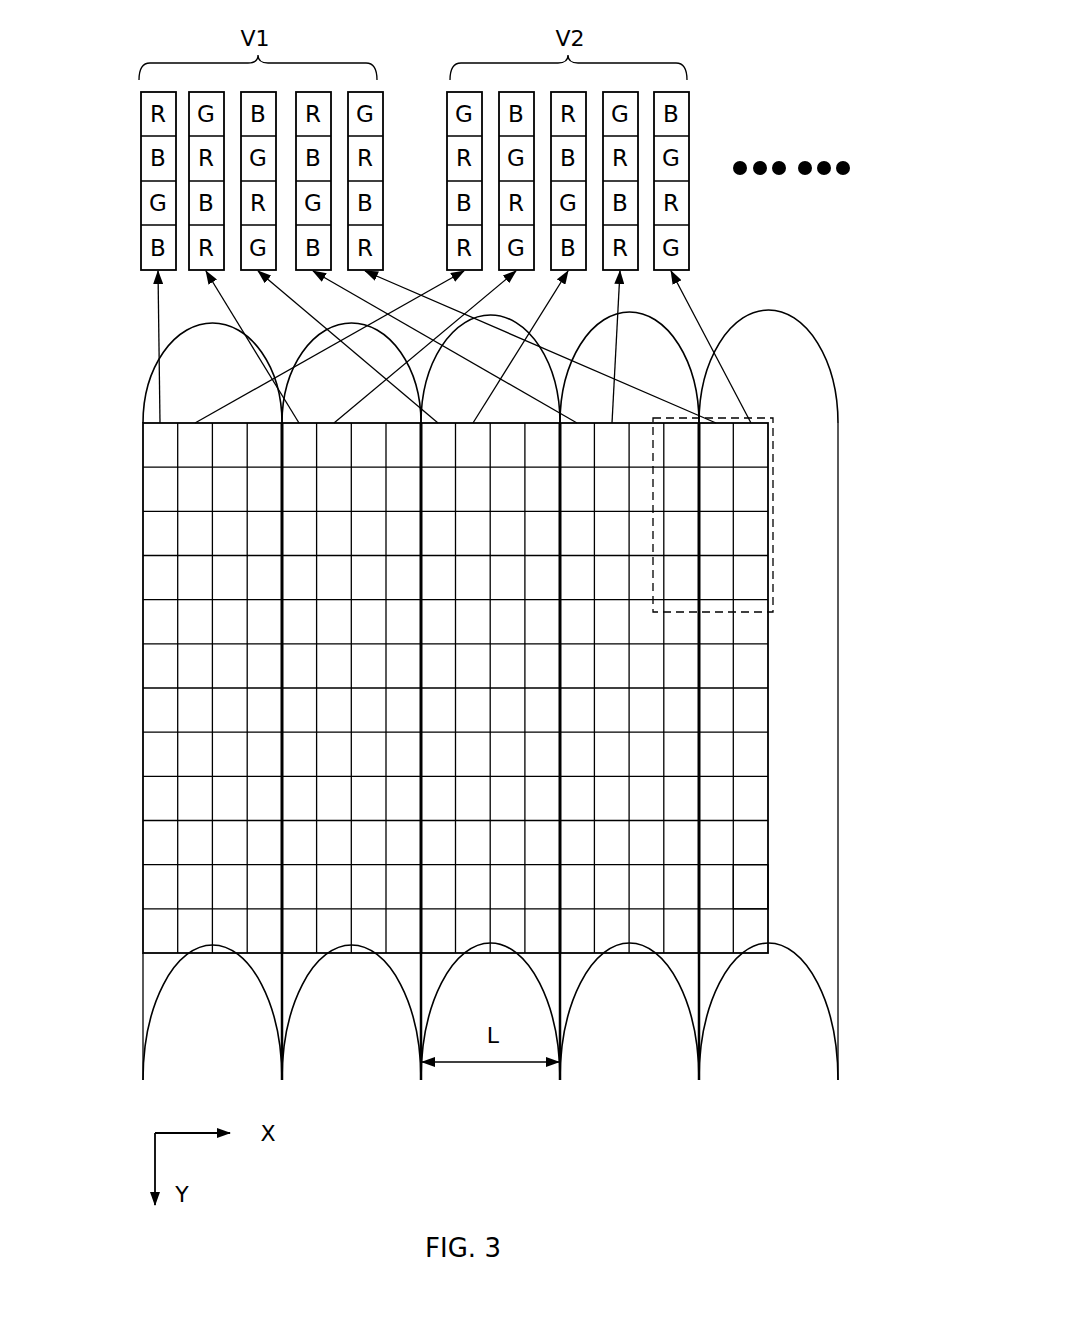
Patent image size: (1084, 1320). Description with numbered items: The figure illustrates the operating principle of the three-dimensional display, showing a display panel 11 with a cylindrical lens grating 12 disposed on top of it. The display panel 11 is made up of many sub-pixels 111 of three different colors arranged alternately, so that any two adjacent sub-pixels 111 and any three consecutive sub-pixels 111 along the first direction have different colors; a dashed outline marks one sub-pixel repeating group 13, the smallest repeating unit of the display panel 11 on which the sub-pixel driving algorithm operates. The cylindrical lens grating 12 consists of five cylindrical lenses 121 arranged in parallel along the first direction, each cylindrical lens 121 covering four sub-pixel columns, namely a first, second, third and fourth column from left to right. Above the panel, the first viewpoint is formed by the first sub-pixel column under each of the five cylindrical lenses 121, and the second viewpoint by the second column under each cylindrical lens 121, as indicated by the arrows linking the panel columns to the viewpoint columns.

The display panel 11 is at (769, 766).
The sub-pixel 111 is at (756, 878).
The cylindrical lens grating 12 is at (490, 1055).
The cylindrical lens 121 is at (629, 1011).
The sub-pixel repeating group 13 is at (775, 607).